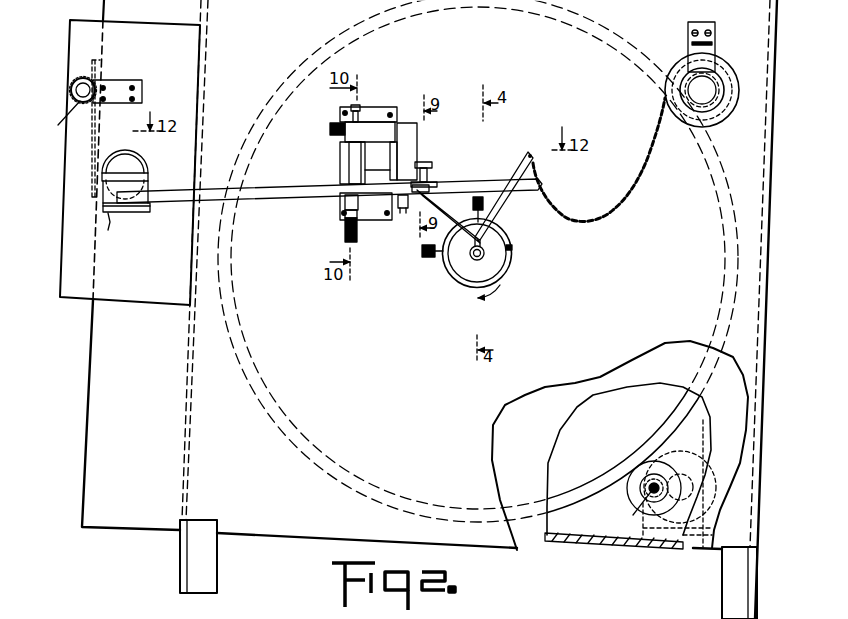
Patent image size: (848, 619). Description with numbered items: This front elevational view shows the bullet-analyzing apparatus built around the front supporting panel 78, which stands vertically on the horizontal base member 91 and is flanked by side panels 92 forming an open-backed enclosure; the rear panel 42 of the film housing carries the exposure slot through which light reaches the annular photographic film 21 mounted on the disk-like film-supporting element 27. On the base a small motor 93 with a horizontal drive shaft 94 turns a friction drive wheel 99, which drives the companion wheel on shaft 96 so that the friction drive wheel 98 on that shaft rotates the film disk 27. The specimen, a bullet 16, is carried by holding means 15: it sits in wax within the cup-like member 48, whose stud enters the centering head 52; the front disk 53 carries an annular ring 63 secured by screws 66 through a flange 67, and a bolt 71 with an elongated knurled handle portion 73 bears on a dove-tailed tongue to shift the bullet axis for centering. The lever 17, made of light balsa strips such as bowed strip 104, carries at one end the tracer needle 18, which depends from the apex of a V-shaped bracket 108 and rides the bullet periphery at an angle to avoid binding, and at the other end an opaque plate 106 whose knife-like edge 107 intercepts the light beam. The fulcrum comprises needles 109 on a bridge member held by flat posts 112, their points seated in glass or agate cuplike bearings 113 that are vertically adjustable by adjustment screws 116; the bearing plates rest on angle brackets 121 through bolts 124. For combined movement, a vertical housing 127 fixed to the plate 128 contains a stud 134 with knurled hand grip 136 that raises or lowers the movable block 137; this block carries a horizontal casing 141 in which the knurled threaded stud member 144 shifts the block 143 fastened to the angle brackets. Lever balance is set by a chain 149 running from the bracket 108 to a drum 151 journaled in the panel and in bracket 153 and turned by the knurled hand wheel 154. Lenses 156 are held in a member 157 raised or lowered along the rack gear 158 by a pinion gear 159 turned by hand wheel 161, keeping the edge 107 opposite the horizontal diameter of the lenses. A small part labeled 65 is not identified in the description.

The holding means 15 is at (511, 276).
The bullet 16 is at (471, 251).
The lever 17 is at (287, 196).
The needle 18 is at (500, 238).
The photographic film 21 is at (623, 424).
The film-supporting element 27 is at (661, 447).
The rear panel 42 is at (607, 521).
The cup-like member 48 is at (472, 259).
The centering head 52 is at (512, 248).
The front disk 53 is at (454, 263).
The annular ring 63 is at (456, 281).
The pin 65 is at (337, 190).
The screws 66 is at (471, 297).
The flange 67 is at (516, 259).
The bolt 71 is at (476, 212).
The knurled handle portion 73 is at (422, 251).
The front supporting panel 78 is at (258, 497).
The base member 91 is at (217, 557).
The side panels 92 is at (180, 562).
The motor 93 is at (708, 527).
The drive shaft 94 is at (703, 474).
The shaft 96 is at (632, 513).
The friction drive wheel 98 is at (638, 478).
The friction drive wheel 99 is at (698, 472).
The bowed strip 104 is at (281, 178).
The opaque plate 106 is at (112, 232).
The knife-like edge 107 is at (140, 175).
The V-shaped bracket 108 is at (500, 204).
The needles 109 is at (432, 166).
The flat posts 112 is at (432, 179).
The cuplike bearings 113 is at (395, 172).
The adjustment screws 116 is at (407, 210).
The angle brackets 121 is at (417, 140).
The bolts 124 is at (368, 206).
The housing 127 is at (344, 170).
The plate 128 is at (368, 107).
The stud 134 is at (366, 220).
The knurled hand grip 136 is at (345, 231).
The movable block 137 is at (340, 147).
The casing 141 is at (370, 132).
The movable block 143 is at (391, 113).
The threaded stud member 144 is at (348, 109).
The chain 149 is at (630, 200).
The drum 151 is at (732, 74).
The bracket 153 is at (715, 45).
The knurled hand wheel 154 is at (719, 104).
The lenses 156 is at (143, 156).
The member 157 is at (68, 244).
The rack gear 158 is at (100, 62).
The pinion gear 159 is at (71, 93).
The hand wheel 161 is at (53, 118).